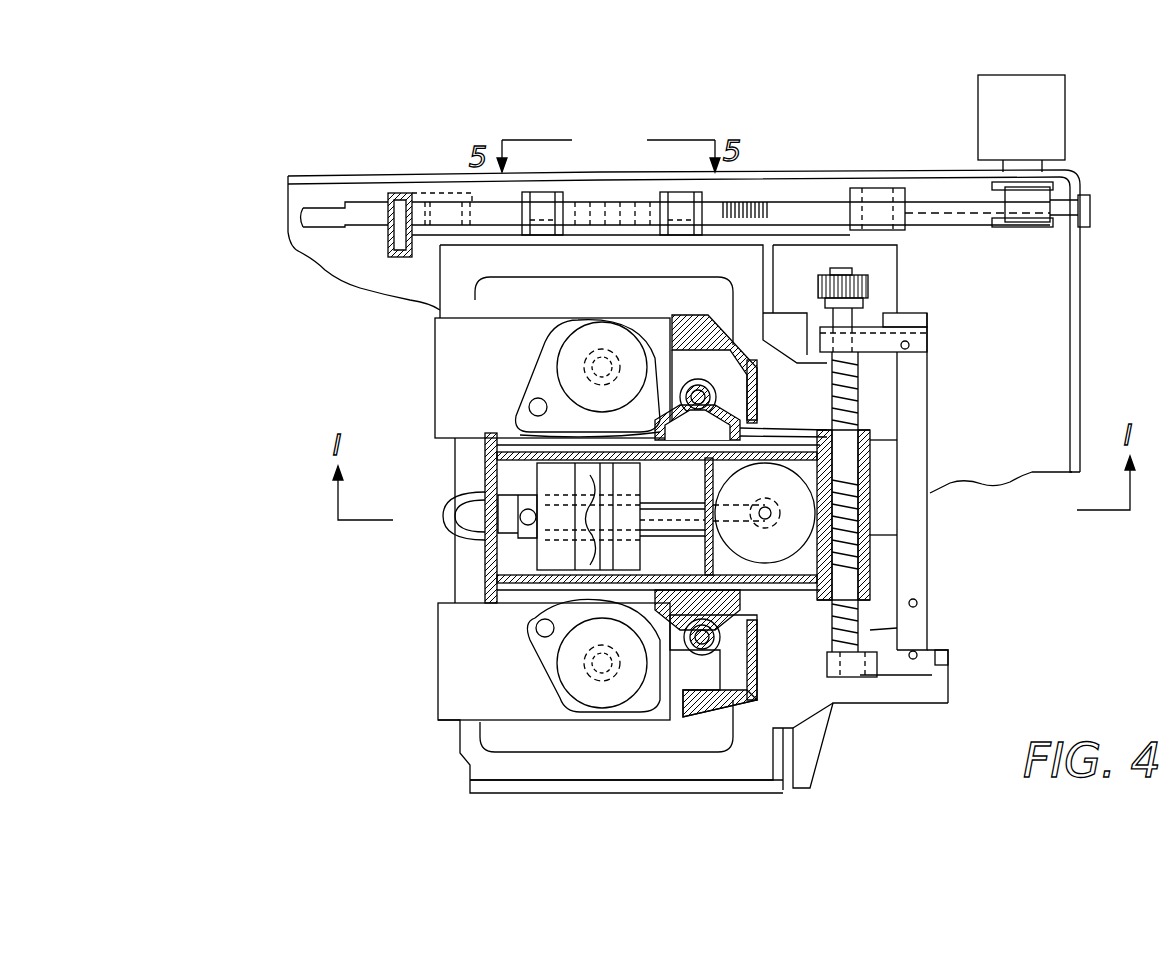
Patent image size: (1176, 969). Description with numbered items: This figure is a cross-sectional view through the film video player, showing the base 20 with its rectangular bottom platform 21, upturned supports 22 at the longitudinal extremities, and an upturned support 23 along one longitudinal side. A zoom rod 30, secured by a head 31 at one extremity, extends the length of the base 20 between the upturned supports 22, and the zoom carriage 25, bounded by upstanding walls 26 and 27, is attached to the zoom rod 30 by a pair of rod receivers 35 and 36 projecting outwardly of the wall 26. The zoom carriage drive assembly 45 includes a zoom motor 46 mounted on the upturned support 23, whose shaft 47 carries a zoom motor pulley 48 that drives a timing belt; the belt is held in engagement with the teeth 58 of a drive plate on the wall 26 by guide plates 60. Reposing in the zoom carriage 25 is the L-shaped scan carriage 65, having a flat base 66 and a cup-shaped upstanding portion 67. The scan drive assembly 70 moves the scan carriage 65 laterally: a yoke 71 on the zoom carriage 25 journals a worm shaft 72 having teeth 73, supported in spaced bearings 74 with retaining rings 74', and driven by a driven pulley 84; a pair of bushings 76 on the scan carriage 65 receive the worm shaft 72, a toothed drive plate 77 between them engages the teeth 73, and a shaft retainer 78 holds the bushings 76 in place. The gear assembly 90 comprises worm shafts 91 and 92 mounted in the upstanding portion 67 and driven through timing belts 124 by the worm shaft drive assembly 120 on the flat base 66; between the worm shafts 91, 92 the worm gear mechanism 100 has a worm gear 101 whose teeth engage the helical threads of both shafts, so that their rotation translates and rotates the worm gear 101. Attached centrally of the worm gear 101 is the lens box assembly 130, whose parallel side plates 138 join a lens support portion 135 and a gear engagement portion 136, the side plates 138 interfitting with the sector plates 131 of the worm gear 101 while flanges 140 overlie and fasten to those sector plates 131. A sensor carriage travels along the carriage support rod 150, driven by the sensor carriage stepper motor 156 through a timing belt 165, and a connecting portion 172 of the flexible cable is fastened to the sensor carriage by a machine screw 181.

The base 20 is at (278, 236).
The bottom platform 21 is at (345, 258).
The upturned supports 22 is at (1080, 303).
The upturned support 23 is at (820, 172).
The zoom carriage 25 is at (958, 686).
The upstanding wall 26 is at (608, 240).
The upstanding wall 27 is at (612, 785).
The zoom rod 30 is at (1062, 200).
The head 31 is at (1092, 213).
The rod receiver 35 is at (440, 185).
The rod receiver 36 is at (878, 187).
The zoom carriage drive assembly 45 is at (1080, 127).
The zoom motor 46 is at (1058, 92).
The shaft 47 is at (1030, 180).
The zoom motor pulley 48 is at (1030, 227).
The teeth 58 is at (598, 200).
The guide plates 60 is at (540, 193).
The scan carriage 65 is at (770, 387).
The flat base 66 is at (455, 343).
The cup-shaped upstanding portion 67 is at (701, 322).
The scan drive assembly 70 is at (880, 292).
The yoke 71 is at (920, 610).
The worm shaft 72 is at (945, 657).
The teeth 73 is at (870, 630).
The bearings 74 is at (902, 526).
The rings 74' is at (855, 526).
The bushings 76 is at (835, 468).
The toothed drive plate 77 is at (870, 510).
The shaft retainer 78 is at (870, 495).
The driven pulley 84 is at (845, 283).
The gear assembly 90 is at (545, 610).
The worm shaft 91 is at (705, 655).
The worm shaft 92 is at (690, 382).
The worm gear mechanism 100 is at (740, 660).
The worm gear 101 is at (610, 435).
The worm shaft drive assembly 120 is at (510, 378).
The timing belt 124 is at (595, 362).
The lens box assembly 130 is at (475, 575).
The sector plates 131 is at (752, 440).
The lens support portion 135 is at (470, 590).
The gear engagement portion 136 is at (745, 560).
The side plates 138 is at (497, 470).
The flanges 140 is at (672, 514).
The carriage support rod 150 is at (732, 513).
The sensor carriage stepper motor 156 is at (870, 532).
The timing belt 165 is at (455, 503).
The connecting portion 172 is at (590, 548).
The machine screw 181 is at (525, 525).